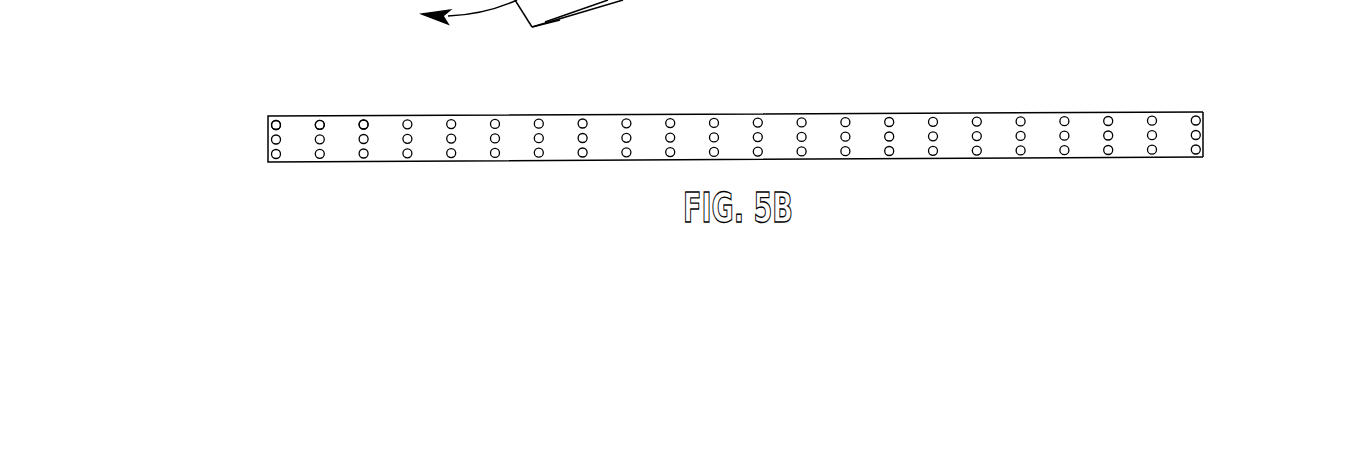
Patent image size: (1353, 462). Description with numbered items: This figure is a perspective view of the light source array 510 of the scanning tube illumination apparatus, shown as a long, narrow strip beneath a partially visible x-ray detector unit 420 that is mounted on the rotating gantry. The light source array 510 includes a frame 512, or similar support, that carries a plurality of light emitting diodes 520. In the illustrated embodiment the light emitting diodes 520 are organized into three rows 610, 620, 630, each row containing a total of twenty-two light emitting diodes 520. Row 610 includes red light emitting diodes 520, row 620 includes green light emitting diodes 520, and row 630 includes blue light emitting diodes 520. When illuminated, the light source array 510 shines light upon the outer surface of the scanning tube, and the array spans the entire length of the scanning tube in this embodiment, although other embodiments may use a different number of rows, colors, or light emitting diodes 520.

The x-ray detector unit 420 is at (583, 0).
The light source array 510 is at (1084, 78).
The frame 512 is at (1203, 127).
The light emitting diodes 520 is at (364, 118).
The row 610 is at (250, 121).
The row 620 is at (248, 140).
The row 630 is at (249, 157).